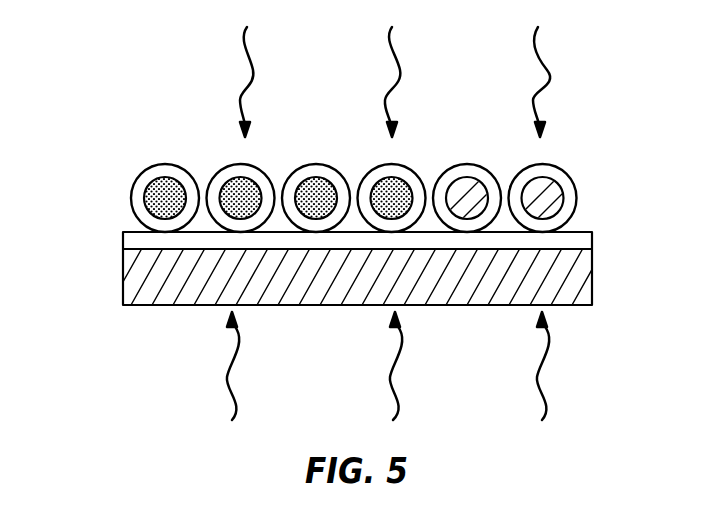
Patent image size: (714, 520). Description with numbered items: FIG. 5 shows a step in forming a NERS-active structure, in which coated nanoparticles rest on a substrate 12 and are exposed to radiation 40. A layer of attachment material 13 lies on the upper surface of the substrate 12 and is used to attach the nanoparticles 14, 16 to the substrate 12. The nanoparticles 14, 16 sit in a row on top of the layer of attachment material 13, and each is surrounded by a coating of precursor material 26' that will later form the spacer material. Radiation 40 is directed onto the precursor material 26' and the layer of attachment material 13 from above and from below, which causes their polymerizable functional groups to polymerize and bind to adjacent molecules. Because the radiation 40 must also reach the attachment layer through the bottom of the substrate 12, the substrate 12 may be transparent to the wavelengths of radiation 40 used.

The substrate 12 is at (128, 270).
The layer of attachment material 13 is at (130, 243).
The nanoparticle 14 is at (163, 178).
The nanoparticle 16 is at (550, 202).
The precursor material 26' is at (592, 184).
The radiation 40 is at (548, 73).